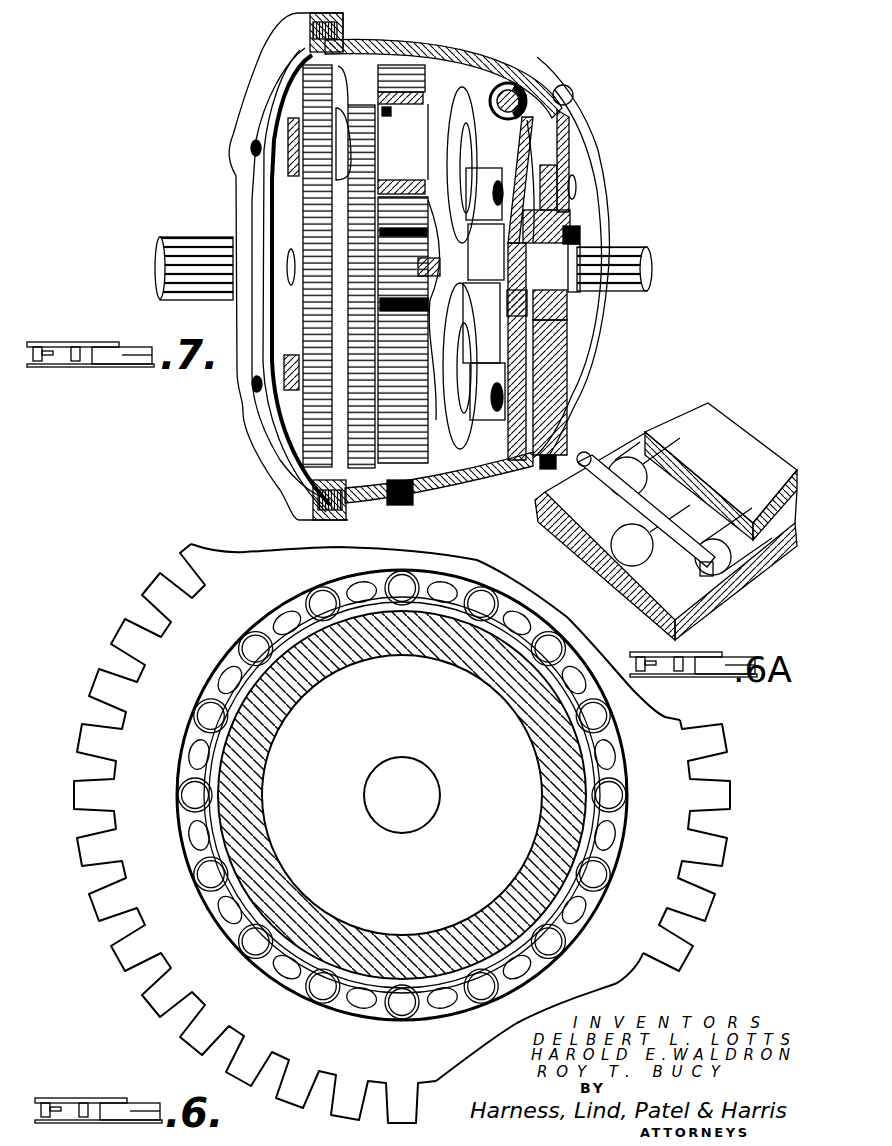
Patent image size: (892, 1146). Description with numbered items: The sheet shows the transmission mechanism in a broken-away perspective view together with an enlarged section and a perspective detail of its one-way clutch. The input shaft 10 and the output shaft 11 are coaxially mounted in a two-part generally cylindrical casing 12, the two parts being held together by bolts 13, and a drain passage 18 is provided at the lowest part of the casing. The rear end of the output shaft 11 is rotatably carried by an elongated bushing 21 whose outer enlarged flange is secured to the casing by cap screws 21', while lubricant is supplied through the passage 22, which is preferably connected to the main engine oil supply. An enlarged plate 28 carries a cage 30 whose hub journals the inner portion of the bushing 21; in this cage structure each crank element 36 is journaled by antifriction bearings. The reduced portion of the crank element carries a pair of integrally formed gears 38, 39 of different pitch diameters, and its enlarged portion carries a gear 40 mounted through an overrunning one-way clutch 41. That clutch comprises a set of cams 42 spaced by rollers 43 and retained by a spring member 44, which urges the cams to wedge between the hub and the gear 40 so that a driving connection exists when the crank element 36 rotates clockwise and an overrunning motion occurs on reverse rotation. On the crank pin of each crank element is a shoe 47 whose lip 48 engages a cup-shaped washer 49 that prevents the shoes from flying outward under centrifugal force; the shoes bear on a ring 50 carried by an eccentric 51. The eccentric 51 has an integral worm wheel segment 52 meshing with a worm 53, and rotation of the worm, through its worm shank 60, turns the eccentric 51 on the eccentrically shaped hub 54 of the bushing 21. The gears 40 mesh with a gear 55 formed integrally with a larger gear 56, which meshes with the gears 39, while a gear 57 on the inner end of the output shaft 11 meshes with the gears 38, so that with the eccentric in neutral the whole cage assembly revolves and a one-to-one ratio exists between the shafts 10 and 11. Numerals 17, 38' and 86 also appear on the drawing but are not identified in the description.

In FIG. 7, the input shaft 10 is at (202, 238).
In FIG. 7, the output shaft 11 is at (633, 248).
In FIG. 7, the casing 12 is at (405, 50).
In FIG. 7, the bolts 13 is at (343, 31).
In FIG. 7, the hub 17 is at (590, 246).
In FIG. 7, the drain passage 18 is at (415, 502).
In FIG. 7, the elongated bushing 21 is at (588, 262).
In FIG. 7, the cap screws 21' is at (585, 274).
In FIG. 7, the passage 22 is at (565, 440).
In FIG. 7, the enlarged plate 28 is at (290, 326).
In FIG. 7, the cage 30 is at (454, 250).
In FIG. 7, the crank element 36 is at (426, 154).
In FIG. 7, the gear 38 is at (385, 73).
In FIG. 7, the gear 38' is at (451, 209).
In FIG. 7, the gear 39 is at (368, 105).
In FIG. 7, the gear 40 is at (452, 50).
In FIG. 6, the gear 40 is at (137, 692).
In FIG. 6, the overrunning one-way clutch 41 is at (230, 650).
In FIG. 7, the cams 42 is at (394, 113).
In FIG. 6A, the cams 42 is at (693, 507).
In FIG. 6, the cams 42 is at (290, 596).
In FIG. 6A, the rollers 43 is at (643, 472).
In FIG. 6, the rollers 43 is at (335, 580).
In FIG. 6A, the spring member 44 is at (695, 568).
In FIG. 6, the spring member 44 is at (392, 640).
In FIG. 7, the shoe 47 is at (500, 148).
In FIG. 7, the lip 48 is at (468, 224).
In FIG. 7, the cup-shaped washer 49 is at (520, 238).
In FIG. 7, the ring 50 is at (478, 330).
In FIG. 7, the eccentric 51 is at (486, 252).
In FIG. 7, the worm wheel segment 52 is at (526, 148).
In FIG. 7, the worm 53 is at (528, 98).
In FIG. 7, the eccentrically shaped hub 54 is at (518, 268).
In FIG. 7, the gear 55 is at (415, 295).
In FIG. 7, the larger gear 56 is at (330, 300).
In FIG. 7, the gear 57 is at (325, 236).
In FIG. 7, the worm shank 60 is at (570, 97).
In FIG. 6, the inner race 86 is at (252, 772).